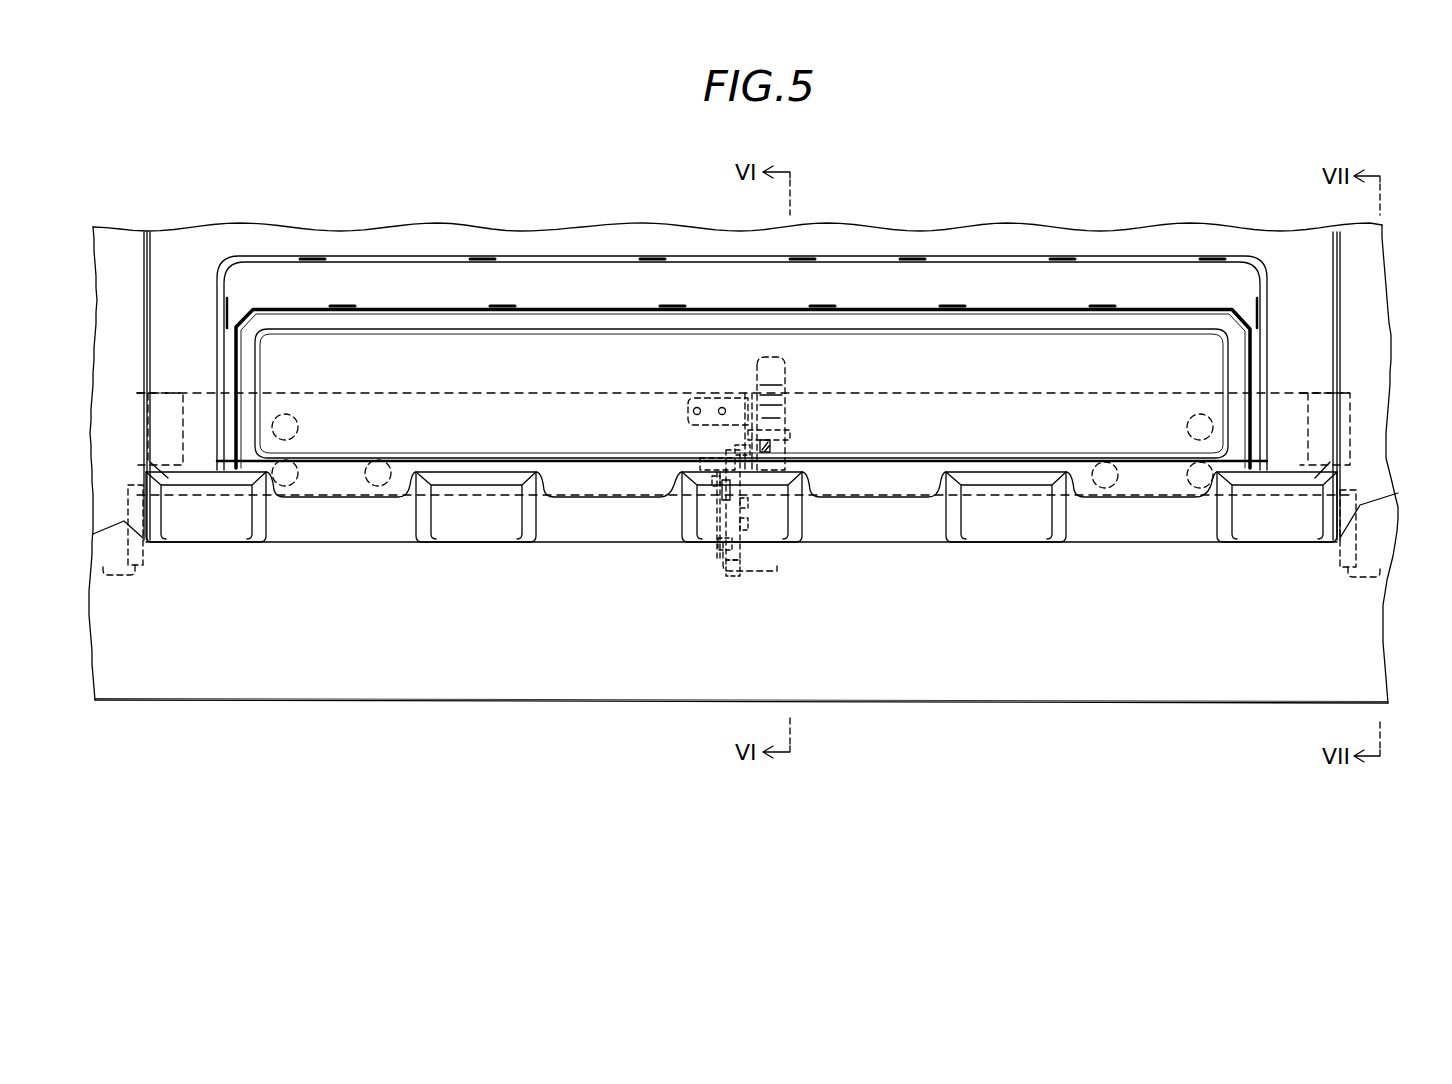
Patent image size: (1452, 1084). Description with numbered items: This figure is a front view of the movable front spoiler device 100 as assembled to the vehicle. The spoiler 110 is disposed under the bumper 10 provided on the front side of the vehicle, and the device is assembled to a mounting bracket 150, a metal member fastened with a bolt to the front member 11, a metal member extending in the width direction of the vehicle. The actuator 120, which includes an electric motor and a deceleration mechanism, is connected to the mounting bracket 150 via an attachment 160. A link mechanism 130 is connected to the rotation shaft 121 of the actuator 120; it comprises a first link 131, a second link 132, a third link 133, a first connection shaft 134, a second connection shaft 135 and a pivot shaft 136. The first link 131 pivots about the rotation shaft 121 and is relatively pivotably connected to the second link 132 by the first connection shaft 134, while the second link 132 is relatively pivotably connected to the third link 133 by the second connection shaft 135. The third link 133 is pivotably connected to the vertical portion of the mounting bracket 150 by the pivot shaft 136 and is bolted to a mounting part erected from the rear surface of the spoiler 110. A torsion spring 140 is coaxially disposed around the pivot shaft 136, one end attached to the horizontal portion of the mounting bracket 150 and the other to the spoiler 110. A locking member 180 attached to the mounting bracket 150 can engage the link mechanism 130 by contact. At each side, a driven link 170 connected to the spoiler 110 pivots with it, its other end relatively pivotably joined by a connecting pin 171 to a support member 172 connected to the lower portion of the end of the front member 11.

The bumper 10 is at (1280, 245).
The front member 11 is at (1050, 390).
The movable front spoiler device 100 is at (1017, 727).
The spoiler 110 is at (1108, 703).
The actuator 120 is at (782, 357).
The rotation shaft 121 is at (735, 447).
The link mechanism 130 is at (595, 642).
The first link 131 is at (735, 458).
The second link 132 is at (735, 503).
The third link 133 is at (717, 679).
The first connection shaft 134 is at (716, 482).
The second connection shaft 135 is at (722, 545).
The pivot shaft 136 is at (735, 523).
The spring 140 is at (772, 547).
The mounting bracket 150 is at (700, 395).
The attachment 160 is at (748, 440).
The driven link 170 is at (120, 575).
The connecting pin 171 is at (130, 527).
The support member 172 is at (143, 548).
The locking member 180 is at (740, 440).